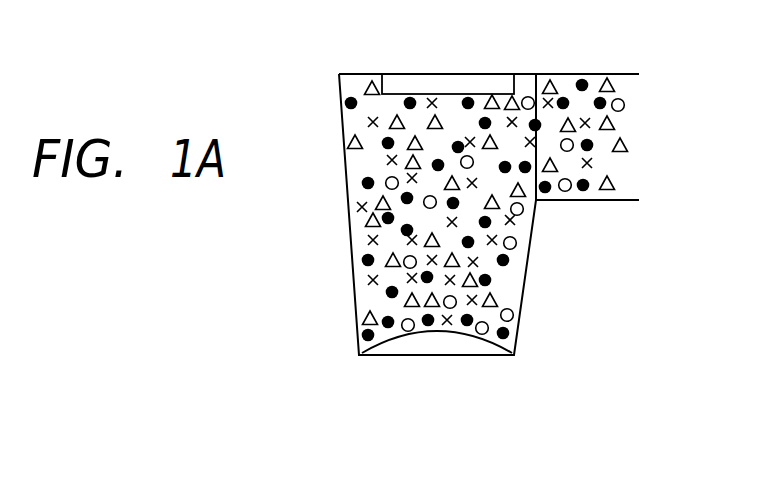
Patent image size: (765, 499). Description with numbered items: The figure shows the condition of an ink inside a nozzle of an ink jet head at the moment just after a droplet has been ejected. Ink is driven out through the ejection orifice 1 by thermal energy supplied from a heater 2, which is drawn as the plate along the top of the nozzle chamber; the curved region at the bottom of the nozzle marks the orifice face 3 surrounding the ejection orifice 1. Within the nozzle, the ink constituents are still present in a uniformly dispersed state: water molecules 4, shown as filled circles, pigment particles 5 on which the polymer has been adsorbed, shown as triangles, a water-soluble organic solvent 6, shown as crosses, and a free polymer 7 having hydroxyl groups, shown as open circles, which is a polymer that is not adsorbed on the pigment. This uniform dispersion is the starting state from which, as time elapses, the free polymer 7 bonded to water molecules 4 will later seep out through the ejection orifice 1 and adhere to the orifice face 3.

The ejection orifice 1 is at (472, 345).
The heater 2 is at (452, 82).
The orifice face 3 is at (398, 358).
The water molecule 4 is at (340, 98).
The pigment particle 5 is at (628, 148).
The water-soluble organic solvent 6 is at (357, 205).
The free polymer having hydroxyl groups 7 is at (627, 105).